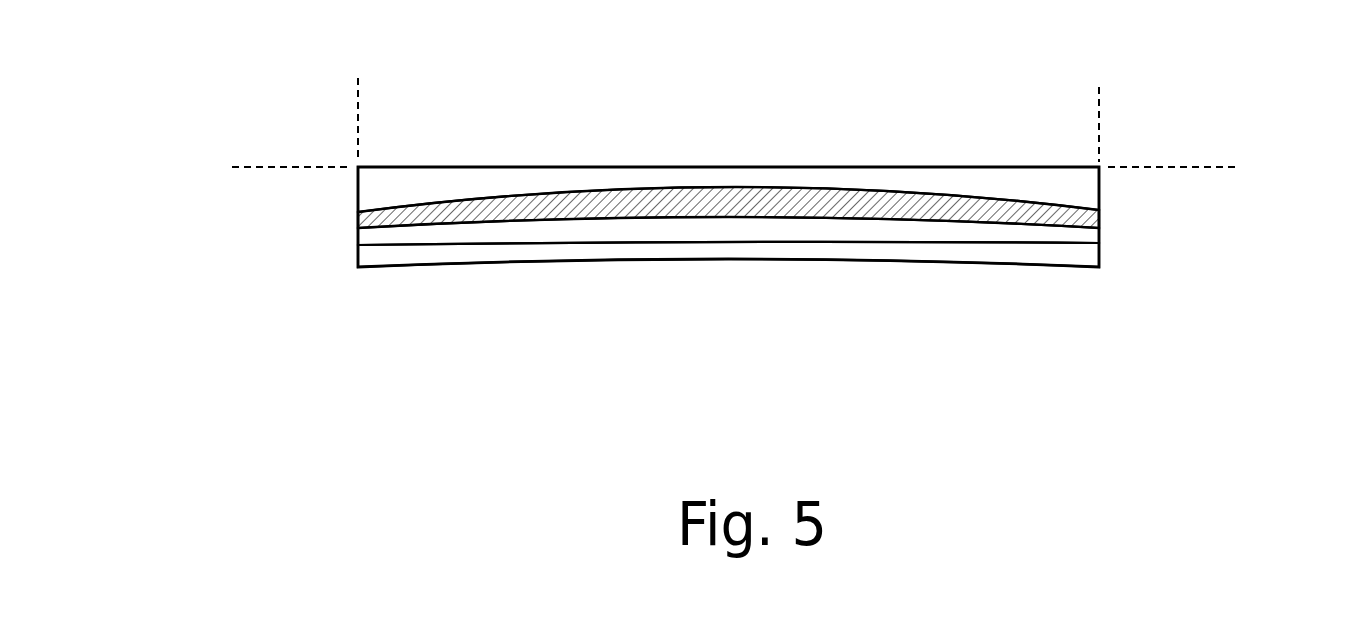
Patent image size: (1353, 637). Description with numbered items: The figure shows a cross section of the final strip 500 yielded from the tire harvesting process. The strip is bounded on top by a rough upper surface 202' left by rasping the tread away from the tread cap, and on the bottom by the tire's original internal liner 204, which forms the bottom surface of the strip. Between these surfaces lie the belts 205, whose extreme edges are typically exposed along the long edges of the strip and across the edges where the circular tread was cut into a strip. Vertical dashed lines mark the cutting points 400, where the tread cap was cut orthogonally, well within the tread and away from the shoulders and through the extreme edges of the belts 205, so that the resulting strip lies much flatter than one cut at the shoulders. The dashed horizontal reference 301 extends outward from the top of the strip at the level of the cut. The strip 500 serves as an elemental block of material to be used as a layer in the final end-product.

The final strip 500 is at (580, 76).
The rough upper surface 202' is at (728, 148).
The belts 205 is at (1112, 220).
The original internal liner 204 is at (740, 260).
The reference plane 301 is at (736, 168).
The cutting points 400 is at (726, 100).